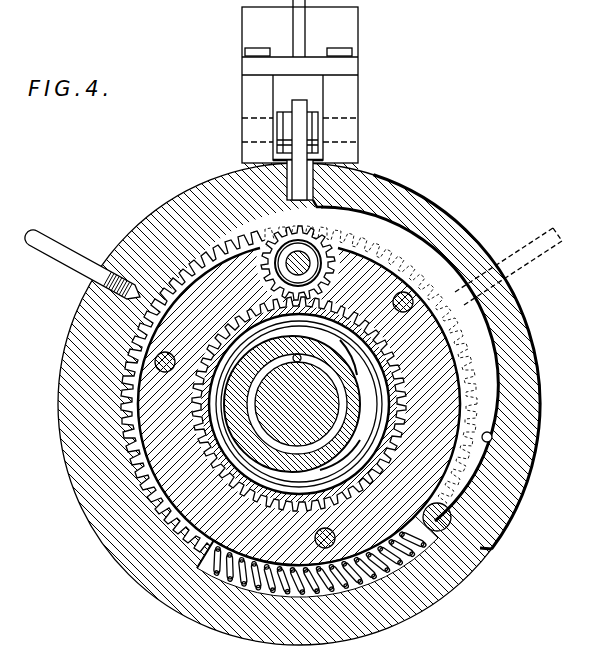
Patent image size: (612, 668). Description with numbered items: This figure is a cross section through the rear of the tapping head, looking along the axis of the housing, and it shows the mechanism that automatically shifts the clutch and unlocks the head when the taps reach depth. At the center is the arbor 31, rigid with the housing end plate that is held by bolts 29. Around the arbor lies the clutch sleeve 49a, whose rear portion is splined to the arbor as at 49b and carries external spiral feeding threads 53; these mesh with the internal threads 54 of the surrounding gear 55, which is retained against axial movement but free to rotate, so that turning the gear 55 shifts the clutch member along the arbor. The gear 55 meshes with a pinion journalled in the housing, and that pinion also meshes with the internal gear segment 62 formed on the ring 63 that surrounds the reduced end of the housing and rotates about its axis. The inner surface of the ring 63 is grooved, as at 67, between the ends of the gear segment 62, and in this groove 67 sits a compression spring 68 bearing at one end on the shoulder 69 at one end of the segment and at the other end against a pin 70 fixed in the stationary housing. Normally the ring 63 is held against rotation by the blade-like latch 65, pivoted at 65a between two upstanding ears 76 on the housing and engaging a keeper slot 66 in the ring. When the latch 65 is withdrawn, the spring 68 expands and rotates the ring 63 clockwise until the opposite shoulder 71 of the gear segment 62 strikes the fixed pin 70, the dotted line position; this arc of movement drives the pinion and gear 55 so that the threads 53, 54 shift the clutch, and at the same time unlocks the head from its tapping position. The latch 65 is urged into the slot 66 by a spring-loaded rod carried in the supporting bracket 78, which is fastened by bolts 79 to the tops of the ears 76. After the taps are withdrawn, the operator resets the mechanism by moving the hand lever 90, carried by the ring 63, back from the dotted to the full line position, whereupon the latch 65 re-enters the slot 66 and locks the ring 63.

The bolts 29 is at (155, 362).
The arbor 31 is at (298, 354).
The sleeve 49a is at (318, 456).
The splined portion 49b is at (320, 352).
The external spiral feeding threads 53 is at (395, 422).
The internal threads 54 is at (350, 372).
The gear 55 is at (390, 387).
The internal gear segment 62 is at (219, 246).
The ring 63 is at (447, 232).
The latch 65 is at (303, 130).
The pivot 65a is at (251, 129).
The keeper slot 66 is at (303, 188).
The groove 67 is at (492, 437).
The compression spring 68 is at (245, 567).
The shoulder 69 is at (190, 560).
The pin 70 is at (490, 548).
The shoulder 71 is at (323, 221).
The upstanding ears 76 is at (343, 100).
The supporting bracket 78 is at (253, 22).
The bolts 79 is at (247, 52).
The hand lever 90 is at (58, 247).